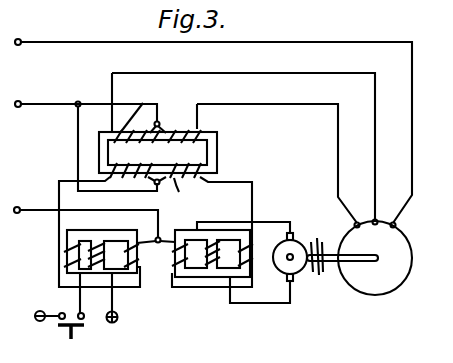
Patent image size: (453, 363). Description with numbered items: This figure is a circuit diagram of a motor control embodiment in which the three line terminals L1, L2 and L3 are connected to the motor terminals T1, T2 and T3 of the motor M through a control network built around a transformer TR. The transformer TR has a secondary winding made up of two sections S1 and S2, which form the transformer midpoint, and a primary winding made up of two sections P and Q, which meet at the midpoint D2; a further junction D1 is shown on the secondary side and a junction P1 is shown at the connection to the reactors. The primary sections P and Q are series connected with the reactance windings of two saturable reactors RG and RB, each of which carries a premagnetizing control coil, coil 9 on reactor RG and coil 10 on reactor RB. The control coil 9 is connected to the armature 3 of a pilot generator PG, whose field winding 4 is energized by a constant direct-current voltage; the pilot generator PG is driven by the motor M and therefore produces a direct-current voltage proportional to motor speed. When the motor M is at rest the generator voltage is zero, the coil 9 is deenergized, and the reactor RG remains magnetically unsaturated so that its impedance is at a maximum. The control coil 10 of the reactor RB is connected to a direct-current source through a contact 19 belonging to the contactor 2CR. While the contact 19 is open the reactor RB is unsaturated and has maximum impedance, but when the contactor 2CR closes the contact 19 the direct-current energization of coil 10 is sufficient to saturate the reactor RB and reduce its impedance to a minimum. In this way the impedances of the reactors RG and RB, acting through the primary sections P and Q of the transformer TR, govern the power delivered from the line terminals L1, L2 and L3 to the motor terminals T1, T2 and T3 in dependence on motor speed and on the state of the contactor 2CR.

The line terminal L1 is at (29, 31).
The line terminal L2 is at (28, 93).
The line terminal L3 is at (22, 200).
The transformer TR is at (219, 149).
The primary transformer winding section Q is at (155, 154).
The secondary winding section S1 is at (141, 104).
The secondary winding section S2 is at (188, 127).
The tap D1 is at (158, 122).
The primary winding midpoint D2 is at (158, 184).
The primary transformer winding section P is at (182, 194).
The junction P1 is at (159, 243).
The saturable reactor RB is at (60, 252).
The premagnetizing control coil 10 is at (93, 246).
The contactor 2CR is at (54, 347).
The contact 19 is at (75, 333).
The saturable reactor RG is at (205, 278).
The premagnetizing control coil 9 is at (205, 268).
The armature 3 is at (278, 249).
The pilot generator PG is at (328, 302).
The field winding 4 is at (320, 251).
The motor M is at (405, 258).
The motor terminal T1 is at (396, 225).
The motor terminal T2 is at (378, 220).
The motor terminal T3 is at (354, 225).